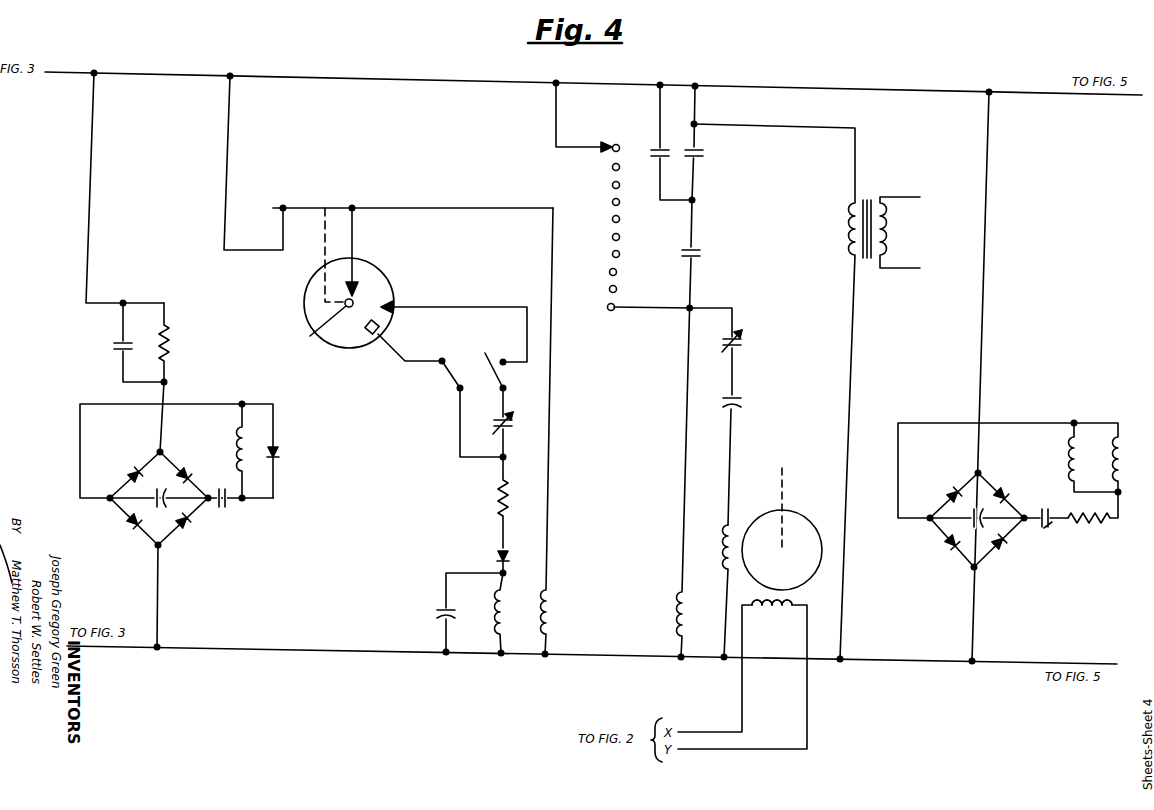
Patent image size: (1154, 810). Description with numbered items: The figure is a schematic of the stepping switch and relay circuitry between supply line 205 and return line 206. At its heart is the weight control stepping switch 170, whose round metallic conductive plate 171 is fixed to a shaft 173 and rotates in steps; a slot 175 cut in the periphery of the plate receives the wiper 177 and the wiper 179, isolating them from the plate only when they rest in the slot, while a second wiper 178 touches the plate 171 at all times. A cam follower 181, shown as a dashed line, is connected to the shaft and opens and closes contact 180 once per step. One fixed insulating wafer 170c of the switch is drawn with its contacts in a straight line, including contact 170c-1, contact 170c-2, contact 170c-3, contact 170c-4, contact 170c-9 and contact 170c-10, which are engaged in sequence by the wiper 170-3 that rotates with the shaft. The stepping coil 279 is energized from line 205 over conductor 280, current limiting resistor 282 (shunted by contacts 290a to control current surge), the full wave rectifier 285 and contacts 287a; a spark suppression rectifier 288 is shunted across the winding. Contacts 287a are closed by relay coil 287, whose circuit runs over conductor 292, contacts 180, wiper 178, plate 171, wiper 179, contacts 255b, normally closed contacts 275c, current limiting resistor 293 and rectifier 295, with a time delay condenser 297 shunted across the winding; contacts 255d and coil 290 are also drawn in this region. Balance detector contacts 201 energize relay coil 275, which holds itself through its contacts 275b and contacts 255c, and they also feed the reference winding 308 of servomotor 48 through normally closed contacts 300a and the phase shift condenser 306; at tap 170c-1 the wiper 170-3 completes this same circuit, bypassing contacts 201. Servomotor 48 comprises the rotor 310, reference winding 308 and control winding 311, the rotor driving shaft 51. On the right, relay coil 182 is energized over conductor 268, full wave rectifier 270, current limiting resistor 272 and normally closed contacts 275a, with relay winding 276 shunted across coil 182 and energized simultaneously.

The line 205 is at (214, 74).
The line 206 is at (140, 653).
The conductor 280 is at (88, 180).
The contacts 290a is at (115, 346).
The current limiting resistor 282 is at (172, 350).
The full wave rectifier 285 is at (136, 459).
The contacts 287a is at (230, 507).
The stepping coil 279 is at (236, 450).
The rectifier 288 is at (276, 453).
The conductor 292 is at (228, 128).
The contact 180 is at (280, 210).
The cam follower 181 is at (321, 250).
The second wiper 178 is at (352, 268).
The stepping switch 170 is at (426, 255).
The conductive plate 171 is at (307, 311).
The shaft 173 is at (317, 331).
The wiper 179 is at (390, 304).
The slot 175 is at (385, 333).
The wiper 177 is at (372, 342).
The relay contact 255d is at (446, 372).
The contacts 255b is at (499, 352).
The normally closed contacts 275c is at (512, 413).
The current limiting resistor 293 is at (496, 501).
The rectifier 295 is at (496, 557).
The time delay condenser 297 is at (439, 615).
The relay coil 287 is at (502, 605).
The relay coil 290 is at (548, 609).
The wiper 170-3 is at (588, 148).
The contact 170c-2 is at (612, 153).
The contact 170c-3 is at (612, 171).
The contact 170c-4 is at (612, 189).
The wafer 170c is at (604, 238).
The contact 170c-9 is at (624, 273).
The contact 170c-10 is at (624, 290).
The tap 170c-1 is at (625, 302).
The contacts 275b is at (650, 142).
The contacts 201 is at (702, 158).
The contacts 255c is at (703, 253).
The relay coil 275 is at (675, 596).
The normally closed contacts 300a is at (746, 339).
The phase shift condenser 306 is at (746, 400).
The reference winding 308 is at (736, 522).
The rotor 310 is at (806, 536).
The shaft 51 is at (788, 481).
The servomotor 48 is at (792, 512).
The control winding 311 is at (798, 602).
The conductor 268 is at (986, 324).
The full wave rectifier 270 is at (963, 475).
The normally closed contacts 275a is at (1046, 536).
The current limiting resistor 272 is at (1093, 525).
The relay coil 182 is at (1068, 464).
The relay winding 276 is at (1118, 437).